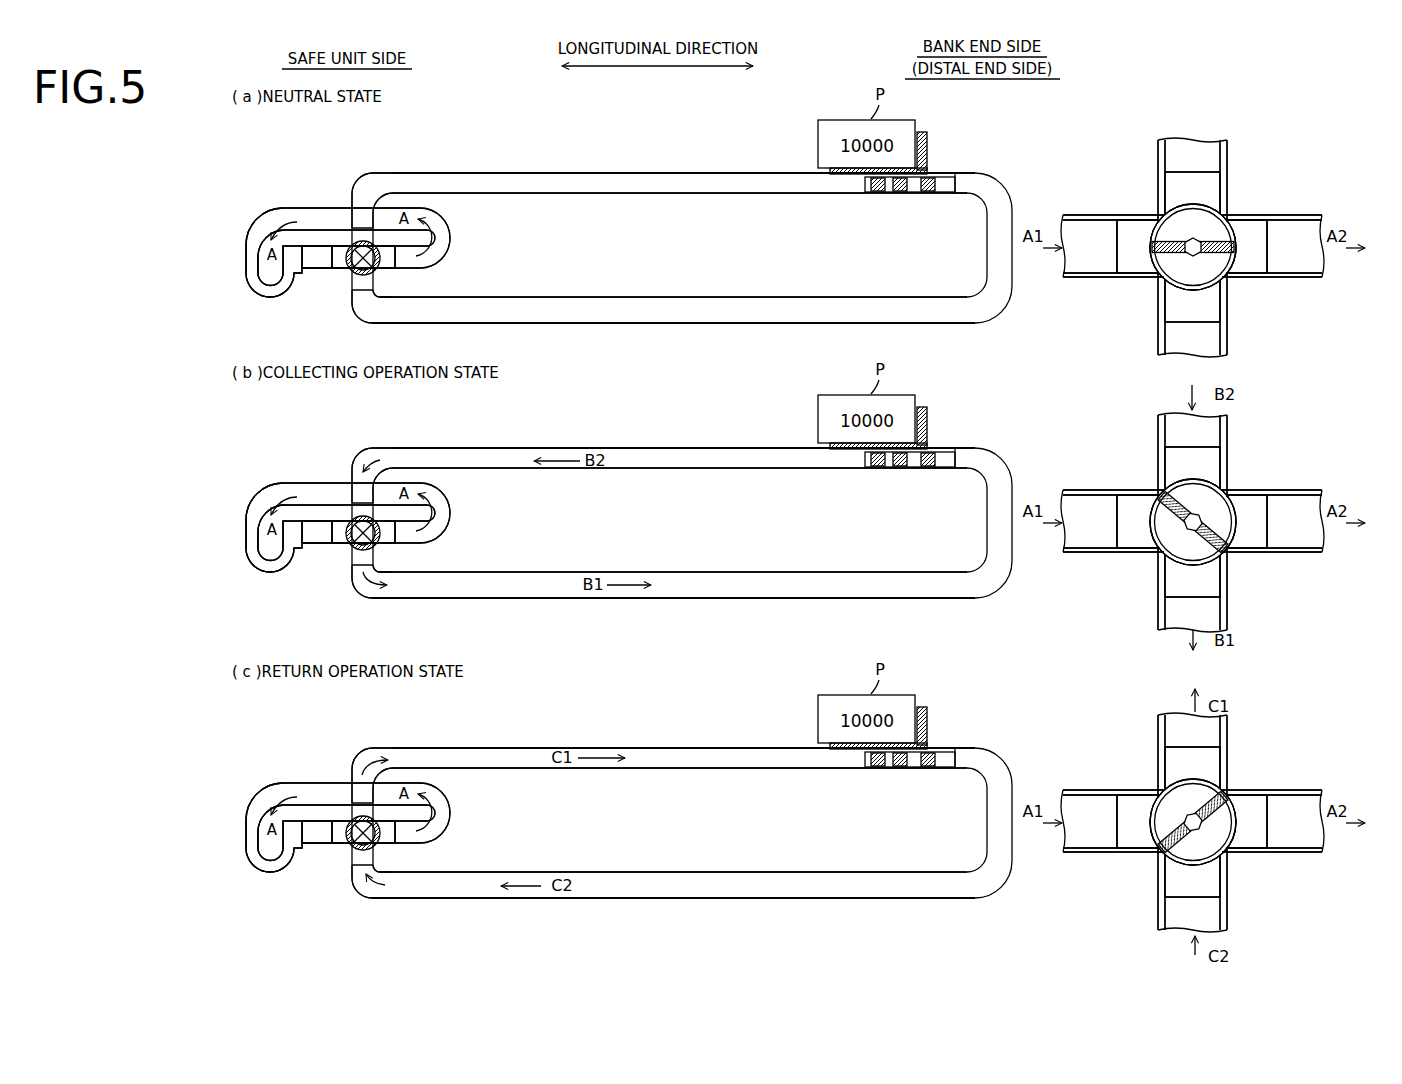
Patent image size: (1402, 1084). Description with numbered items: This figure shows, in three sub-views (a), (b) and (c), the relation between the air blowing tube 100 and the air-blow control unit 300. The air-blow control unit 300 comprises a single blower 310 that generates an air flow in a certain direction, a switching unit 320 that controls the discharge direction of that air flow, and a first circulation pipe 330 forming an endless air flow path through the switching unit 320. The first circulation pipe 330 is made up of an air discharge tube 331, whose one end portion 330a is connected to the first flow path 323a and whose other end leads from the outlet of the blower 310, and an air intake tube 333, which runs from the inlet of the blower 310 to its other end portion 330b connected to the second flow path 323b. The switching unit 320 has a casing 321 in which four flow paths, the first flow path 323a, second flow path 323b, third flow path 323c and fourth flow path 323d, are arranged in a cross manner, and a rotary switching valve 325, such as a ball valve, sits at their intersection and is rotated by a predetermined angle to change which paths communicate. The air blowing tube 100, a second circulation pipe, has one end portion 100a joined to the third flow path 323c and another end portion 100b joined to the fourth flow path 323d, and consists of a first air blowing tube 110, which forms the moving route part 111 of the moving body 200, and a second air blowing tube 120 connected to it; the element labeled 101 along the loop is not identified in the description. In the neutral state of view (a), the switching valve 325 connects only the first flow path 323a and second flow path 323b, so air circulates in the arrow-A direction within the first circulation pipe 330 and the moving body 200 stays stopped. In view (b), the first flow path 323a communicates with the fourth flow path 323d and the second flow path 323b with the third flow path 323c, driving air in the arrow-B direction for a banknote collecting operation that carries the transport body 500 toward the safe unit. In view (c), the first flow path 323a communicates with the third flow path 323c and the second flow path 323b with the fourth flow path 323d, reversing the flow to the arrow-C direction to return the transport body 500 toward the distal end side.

The air blowing tube 100 is at (682, 535).
The one end portion of the air blowing tube 100a is at (833, 470).
The other end portion of the air blowing tube 100b is at (836, 601).
The second tube 101 is at (673, 624).
The first air blowing tube 110 is at (684, 497).
The moving route part 111 is at (684, 446).
The second air blowing tube 120 is at (673, 573).
The moving body 200 is at (877, 484).
The air-blow control unit 300 is at (348, 572).
The blower 310 is at (263, 574).
The switching unit 320 is at (770, 505).
The casing 321 is at (1205, 525).
The first flow path 323a is at (1136, 516).
The second flow path 323b is at (1250, 551).
The third flow path 323c is at (1220, 477).
The fourth flow path 323d is at (1163, 591).
The switching valve 325 is at (1169, 557).
The first circulation pipe 330 is at (343, 505).
The one end portion of the first circulation pipe 330a is at (1105, 506).
The other end portion of the first circulation pipe 330b is at (1294, 552).
The air discharge tube 331 is at (346, 505).
The air intake tube 333 is at (263, 499).
The transport body 500 is at (904, 434).